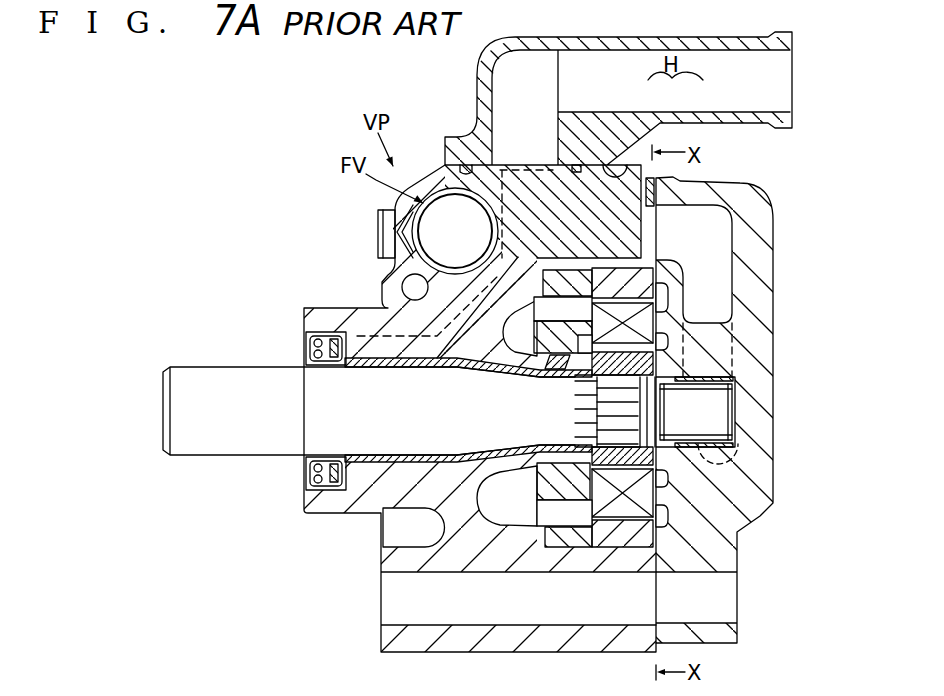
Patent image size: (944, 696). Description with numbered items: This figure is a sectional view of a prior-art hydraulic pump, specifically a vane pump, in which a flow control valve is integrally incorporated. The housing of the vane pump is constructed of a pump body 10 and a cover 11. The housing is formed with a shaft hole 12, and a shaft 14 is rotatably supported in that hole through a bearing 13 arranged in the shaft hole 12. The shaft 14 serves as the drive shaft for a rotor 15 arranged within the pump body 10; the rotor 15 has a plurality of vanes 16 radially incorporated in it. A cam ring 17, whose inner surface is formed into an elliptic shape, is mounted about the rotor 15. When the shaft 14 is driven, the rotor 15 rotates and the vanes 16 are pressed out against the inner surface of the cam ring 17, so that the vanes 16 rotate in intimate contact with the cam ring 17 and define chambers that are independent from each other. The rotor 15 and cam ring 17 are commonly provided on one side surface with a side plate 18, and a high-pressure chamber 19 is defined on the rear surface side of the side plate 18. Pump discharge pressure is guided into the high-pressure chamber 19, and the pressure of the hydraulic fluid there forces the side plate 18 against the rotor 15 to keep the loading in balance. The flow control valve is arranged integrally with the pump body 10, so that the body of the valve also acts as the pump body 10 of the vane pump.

The pump body 10 is at (637, 177).
The cover 11 is at (728, 185).
The shaft hole 12 is at (384, 462).
The bearing 13 is at (404, 465).
The shaft 14 is at (262, 373).
The rotor 15 is at (623, 465).
The vanes 16 is at (648, 327).
The cam ring 17 is at (648, 280).
The side plate 18 is at (573, 527).
The high-pressure chamber 19 is at (512, 526).